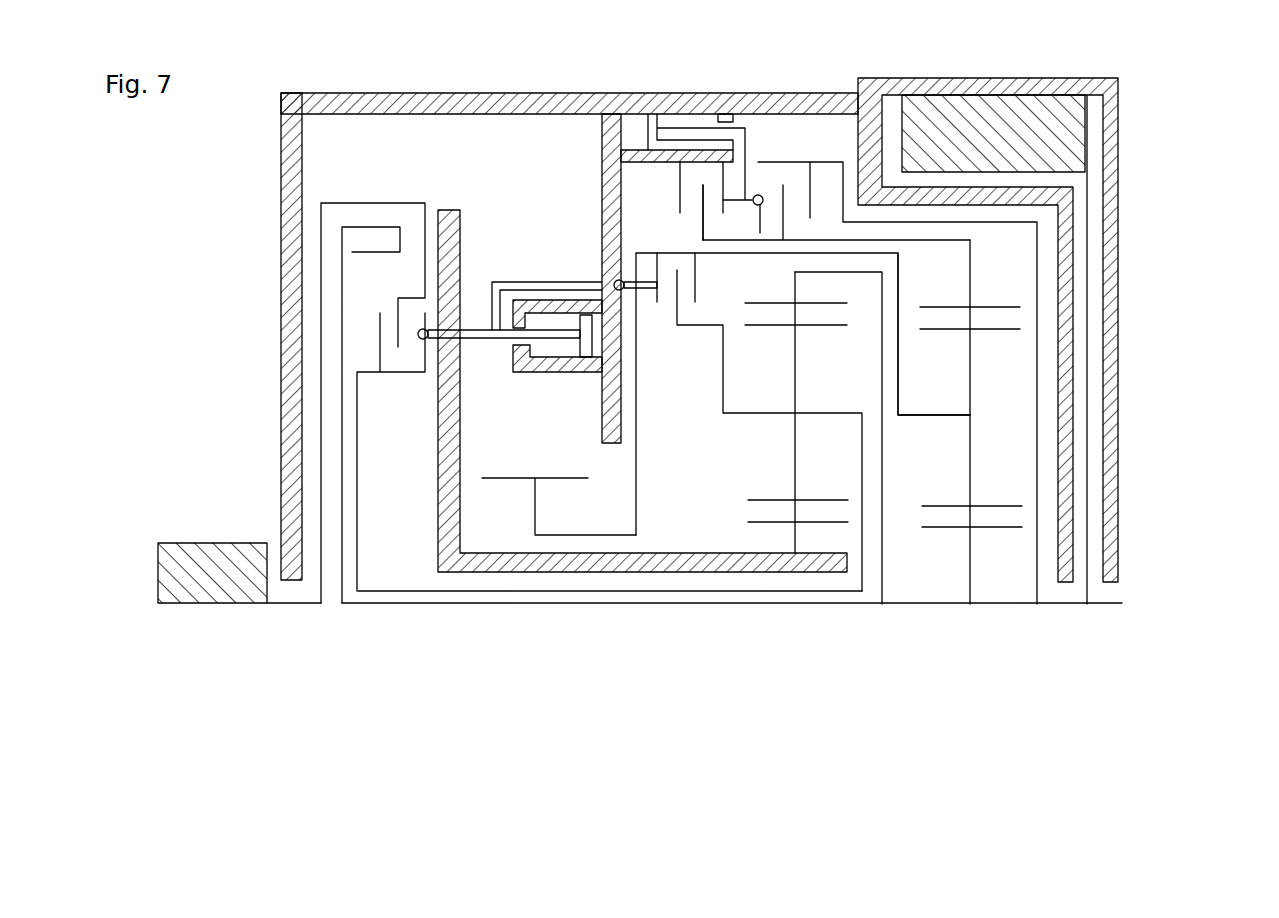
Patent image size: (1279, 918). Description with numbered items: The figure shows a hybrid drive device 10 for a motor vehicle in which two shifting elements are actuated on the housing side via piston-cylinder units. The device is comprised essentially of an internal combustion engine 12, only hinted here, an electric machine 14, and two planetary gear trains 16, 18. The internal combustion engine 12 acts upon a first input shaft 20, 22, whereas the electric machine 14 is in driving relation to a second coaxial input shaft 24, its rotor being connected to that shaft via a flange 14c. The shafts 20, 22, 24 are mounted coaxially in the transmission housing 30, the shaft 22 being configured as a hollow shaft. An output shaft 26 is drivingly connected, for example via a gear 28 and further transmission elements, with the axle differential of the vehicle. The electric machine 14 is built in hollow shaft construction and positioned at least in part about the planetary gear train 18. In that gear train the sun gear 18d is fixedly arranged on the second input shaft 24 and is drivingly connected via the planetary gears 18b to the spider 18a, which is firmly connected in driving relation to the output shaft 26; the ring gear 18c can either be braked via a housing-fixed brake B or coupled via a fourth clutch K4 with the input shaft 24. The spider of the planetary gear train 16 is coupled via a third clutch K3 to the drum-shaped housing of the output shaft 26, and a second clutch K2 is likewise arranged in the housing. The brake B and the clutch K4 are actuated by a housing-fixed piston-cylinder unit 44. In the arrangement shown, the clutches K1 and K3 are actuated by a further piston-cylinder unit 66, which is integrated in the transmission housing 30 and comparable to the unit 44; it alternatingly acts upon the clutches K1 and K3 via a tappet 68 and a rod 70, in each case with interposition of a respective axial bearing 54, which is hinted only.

The hybrid drive device 10 is at (449, 86).
The internal combustion engine 12 is at (205, 543).
The electric machine 14 is at (1026, 86).
The flange 14c is at (1090, 212).
The planetary gear train 16 is at (784, 458).
The second planetary gear train 18 is at (1009, 422).
The spider 18a is at (935, 413).
The planetary gears 18b is at (1008, 334).
The ring gear 18c is at (975, 268).
The sun gear 18d is at (1010, 527).
The first input shaft 20 is at (303, 606).
The first input shaft 22 is at (410, 578).
The second coaxial input shaft 24 is at (486, 606).
The output shaft 26 is at (591, 542).
The gear 28 is at (505, 478).
The transmission housing 30 is at (283, 213).
The piston-cylinder unit 44 is at (694, 107).
The axial bearing 54 is at (615, 281).
The piston-cylinder unit 66 is at (542, 267).
The tappet 68 is at (484, 327).
The rod 70 is at (492, 288).
The first clutch K1 is at (401, 392).
The second clutch K2 is at (371, 194).
The third clutch K3 is at (677, 343).
The fourth clutch K4 is at (785, 198).
The brake B is at (702, 200).